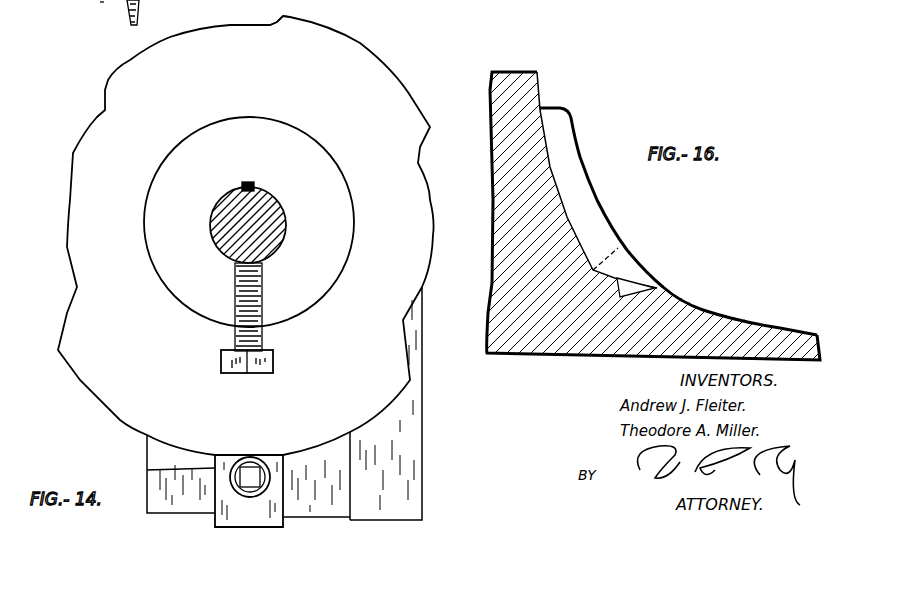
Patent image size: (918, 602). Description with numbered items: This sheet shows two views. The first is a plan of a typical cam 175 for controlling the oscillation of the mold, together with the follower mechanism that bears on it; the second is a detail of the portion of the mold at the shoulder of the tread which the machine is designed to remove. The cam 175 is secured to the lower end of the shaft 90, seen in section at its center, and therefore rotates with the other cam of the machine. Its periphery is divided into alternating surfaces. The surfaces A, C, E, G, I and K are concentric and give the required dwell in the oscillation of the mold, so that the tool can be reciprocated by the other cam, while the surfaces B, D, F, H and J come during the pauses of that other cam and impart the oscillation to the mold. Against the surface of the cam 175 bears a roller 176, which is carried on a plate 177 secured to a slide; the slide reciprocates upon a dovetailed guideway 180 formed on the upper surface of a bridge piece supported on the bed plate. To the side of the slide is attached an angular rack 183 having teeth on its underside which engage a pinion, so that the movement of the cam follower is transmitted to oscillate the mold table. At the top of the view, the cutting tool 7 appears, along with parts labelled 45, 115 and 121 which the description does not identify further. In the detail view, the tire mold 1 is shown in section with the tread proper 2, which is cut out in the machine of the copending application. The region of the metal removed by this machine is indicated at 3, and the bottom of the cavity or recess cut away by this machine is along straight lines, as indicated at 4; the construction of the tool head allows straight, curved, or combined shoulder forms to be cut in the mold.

In FIG. 14, the gear 45 is at (90, 9).
In FIG. 14, the cutting tool 7 is at (130, 17).
In FIG. 14, the flat surface 115 is at (250, 12).
In FIG. 14, the projection 121 is at (297, 12).
In FIG. 14, the cam 175 is at (403, 108).
In FIG. 14, the concentric cam surface G is at (168, 40).
In FIG. 14, the oscillating cam surface H is at (104, 100).
In FIG. 14, the concentric cam surface I is at (70, 198).
In FIG. 14, the oscillating cam surface J is at (66, 318).
In FIG. 14, the concentric cam surface K is at (117, 418).
In FIG. 14, the oscillating cam surface F is at (292, 17).
In FIG. 14, the concentric cam surface E is at (366, 47).
In FIG. 14, the oscillating cam surface D is at (422, 147).
In FIG. 14, the concentric cam surface C is at (432, 240).
In FIG. 14, the oscillating cam surface B is at (410, 350).
In FIG. 14, the concentric cam surface A is at (362, 430).
In FIG. 14, the shaft 90 is at (272, 205).
In FIG. 14, the roller 176 is at (231, 471).
In FIG. 14, the plate 177 is at (215, 495).
In FIG. 14, the dovetailed guideway 180 is at (288, 522).
In FIG. 14, the angular rack 183 is at (412, 437).
In FIG. 16, the tire mold 1 is at (697, 307).
In FIG. 16, the tread 2 is at (570, 170).
In FIG. 16, the region of metal removed 3 is at (620, 262).
In FIG. 16, the straight bottom of cavity 4 is at (657, 288).